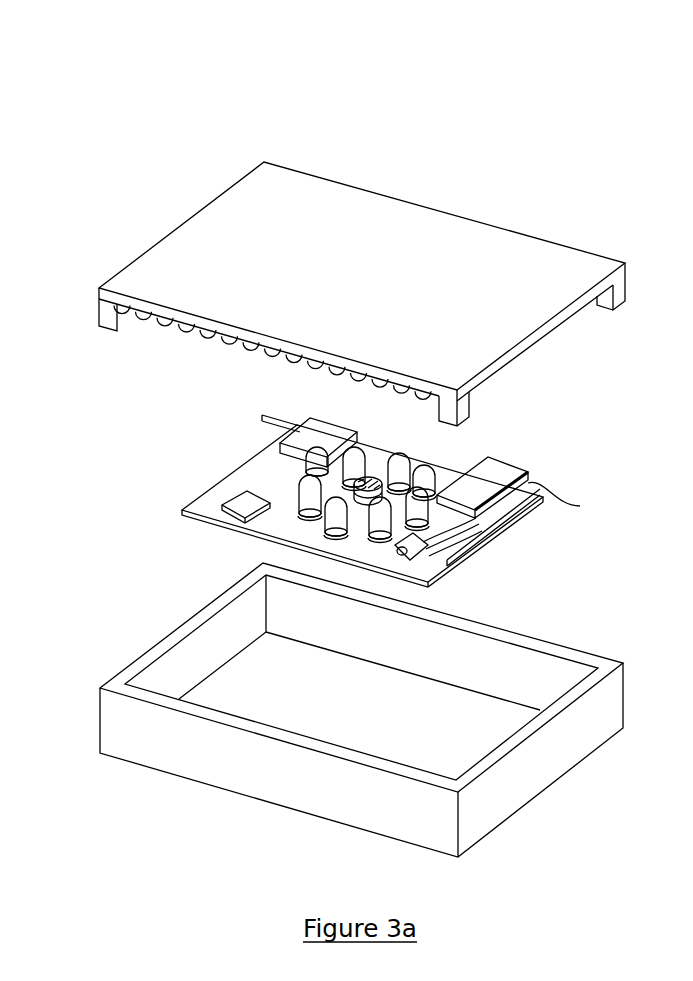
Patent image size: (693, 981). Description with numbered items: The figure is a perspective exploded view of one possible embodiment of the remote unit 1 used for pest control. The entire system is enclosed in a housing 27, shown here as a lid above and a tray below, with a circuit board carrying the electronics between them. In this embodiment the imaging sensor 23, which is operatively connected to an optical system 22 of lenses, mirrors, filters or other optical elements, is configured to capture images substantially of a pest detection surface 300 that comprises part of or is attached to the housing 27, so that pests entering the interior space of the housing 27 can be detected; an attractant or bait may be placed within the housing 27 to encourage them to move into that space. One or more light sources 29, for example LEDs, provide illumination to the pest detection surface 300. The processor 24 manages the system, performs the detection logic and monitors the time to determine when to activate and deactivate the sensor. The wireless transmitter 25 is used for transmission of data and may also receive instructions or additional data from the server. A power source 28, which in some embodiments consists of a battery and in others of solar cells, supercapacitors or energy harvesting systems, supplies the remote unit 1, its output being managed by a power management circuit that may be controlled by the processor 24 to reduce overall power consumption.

The remote unit 1 is at (114, 173).
The housing 27 is at (193, 215).
The pest detection surface 300 is at (203, 340).
The wireless transmitter 25 is at (332, 425).
The processor 24 is at (243, 495).
The optical system 22 is at (370, 474).
The imaging sensor 23 is at (389, 482).
The power source 28 is at (578, 506).
The light source 29 is at (338, 520).